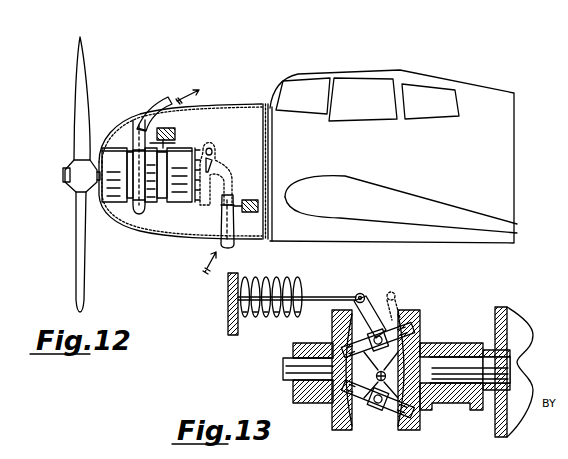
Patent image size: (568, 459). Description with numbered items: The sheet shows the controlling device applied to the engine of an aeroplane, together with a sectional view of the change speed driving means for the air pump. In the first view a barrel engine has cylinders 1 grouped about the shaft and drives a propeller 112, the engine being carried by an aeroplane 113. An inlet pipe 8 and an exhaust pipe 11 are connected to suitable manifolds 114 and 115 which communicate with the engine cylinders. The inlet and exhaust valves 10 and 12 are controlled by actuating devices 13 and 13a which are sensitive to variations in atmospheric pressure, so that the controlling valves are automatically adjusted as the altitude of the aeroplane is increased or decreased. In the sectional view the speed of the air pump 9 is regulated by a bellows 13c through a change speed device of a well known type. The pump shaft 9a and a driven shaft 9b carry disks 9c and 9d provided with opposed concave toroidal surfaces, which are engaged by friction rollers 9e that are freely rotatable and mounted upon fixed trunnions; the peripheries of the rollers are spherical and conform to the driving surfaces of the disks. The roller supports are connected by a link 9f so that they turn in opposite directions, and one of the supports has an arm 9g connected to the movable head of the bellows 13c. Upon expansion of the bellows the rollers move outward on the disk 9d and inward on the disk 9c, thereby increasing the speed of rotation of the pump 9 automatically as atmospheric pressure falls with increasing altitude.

In FIG. 12, the cylinders 1 is at (152, 163).
In FIG. 12, the inlet pipe 8 is at (236, 236).
In FIG. 13, the air pump 9 is at (512, 329).
In FIG. 13, the pump shaft 9a is at (457, 367).
In FIG. 13, the driven shaft 9b is at (287, 378).
In FIG. 13, the disk 9c is at (416, 314).
In FIG. 13, the disk 9d is at (334, 321).
In FIG. 13, the friction rollers 9e is at (402, 303).
In FIG. 13, the link 9f is at (372, 406).
In FIG. 13, the arm 9g is at (362, 294).
In FIG. 12, the inlet valve 10 is at (220, 222).
In FIG. 12, the exhaust pipe 11 is at (156, 103).
In FIG. 12, the exhaust valve 12 is at (139, 119).
In FIG. 12, the actuating device 13 is at (176, 133).
In FIG. 12, the actuating device 13a is at (248, 199).
In FIG. 13, the bellows 13c is at (264, 316).
In FIG. 12, the propeller 112 is at (86, 280).
In FIG. 12, the aeroplane 113 is at (471, 94).
In FIG. 12, the manifold 114 is at (213, 150).
In FIG. 12, the manifold 115 is at (137, 214).